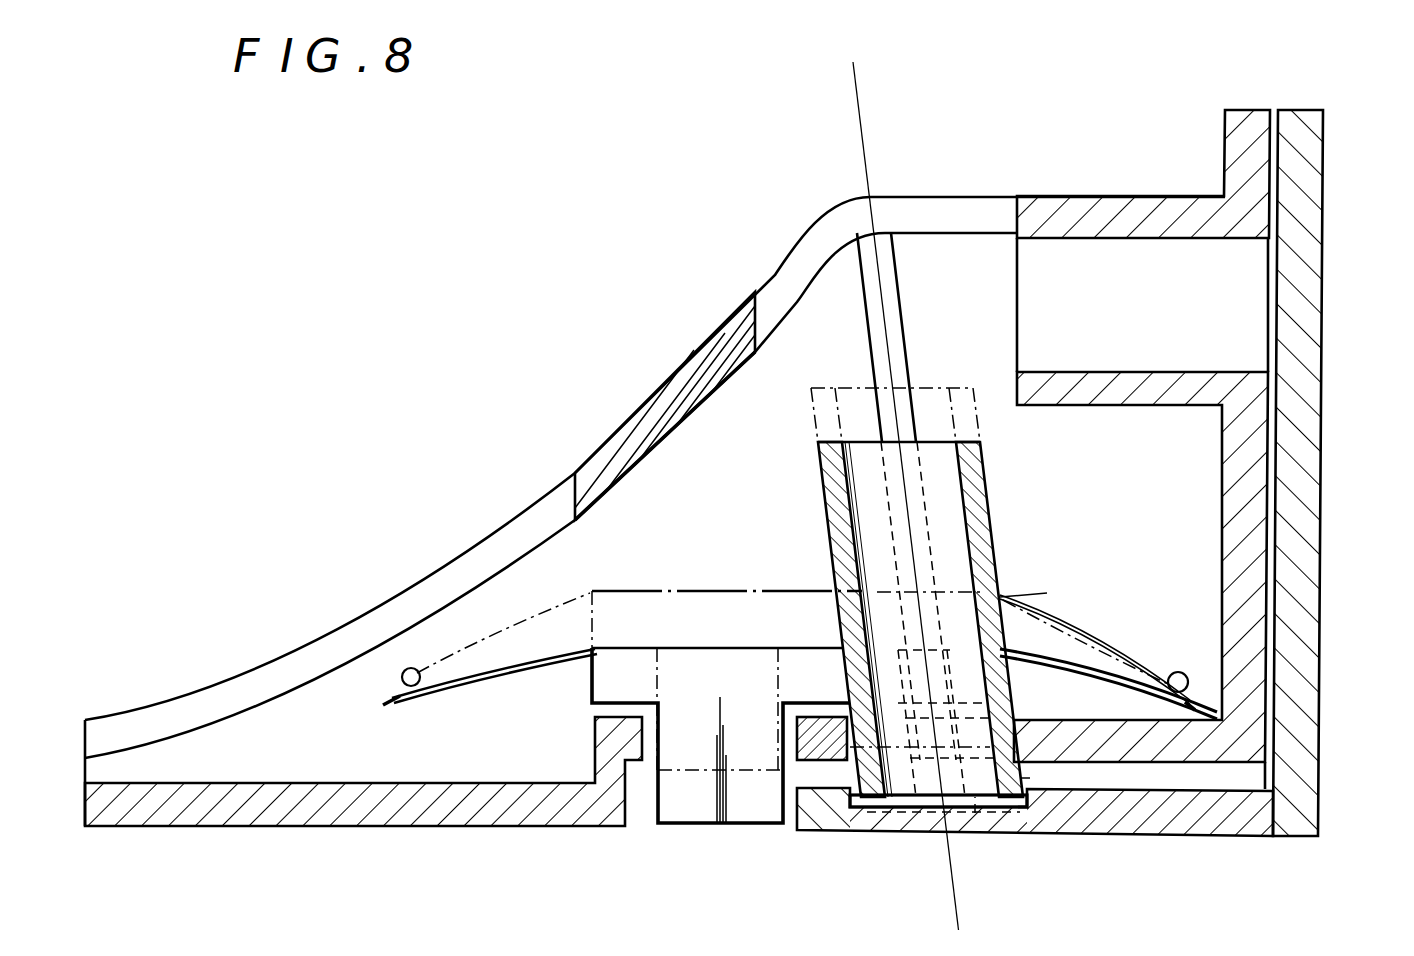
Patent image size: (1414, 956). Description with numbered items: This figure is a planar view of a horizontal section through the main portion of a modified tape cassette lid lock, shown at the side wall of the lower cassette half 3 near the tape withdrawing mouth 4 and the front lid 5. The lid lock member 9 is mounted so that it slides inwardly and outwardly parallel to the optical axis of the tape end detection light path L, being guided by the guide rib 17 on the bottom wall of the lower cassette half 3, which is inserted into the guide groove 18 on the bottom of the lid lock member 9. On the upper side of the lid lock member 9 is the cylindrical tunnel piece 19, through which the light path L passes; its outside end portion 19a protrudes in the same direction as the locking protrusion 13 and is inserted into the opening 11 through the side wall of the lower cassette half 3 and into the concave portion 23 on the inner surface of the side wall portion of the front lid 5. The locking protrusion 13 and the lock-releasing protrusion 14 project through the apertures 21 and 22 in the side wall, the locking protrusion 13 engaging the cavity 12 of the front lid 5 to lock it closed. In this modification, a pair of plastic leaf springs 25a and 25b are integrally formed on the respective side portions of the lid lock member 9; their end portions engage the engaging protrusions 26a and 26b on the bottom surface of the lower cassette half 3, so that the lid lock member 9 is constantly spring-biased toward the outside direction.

The lower cassette half 3 is at (366, 815).
The tape withdrawing mouth 4 is at (1250, 291).
The front lid 5 is at (1312, 455).
The lid lock member 9 is at (1046, 594).
The opening 11 is at (1010, 718).
The cavity 12 is at (975, 813).
The locking protrusion 13 is at (905, 813).
The lock-releasing protrusion 14 is at (685, 806).
The guide rib 17 is at (898, 275).
The guide groove 18 is at (916, 501).
The tunnel piece 19 is at (828, 535).
The outside end portion 19a is at (859, 803).
The aperture 21 is at (1030, 778).
The aperture 22 is at (800, 740).
The concave portion 23 is at (1018, 808).
The spring 25a is at (522, 660).
The spring 25b is at (1103, 672).
The engaging protrusion 26a is at (403, 680).
The engaging protrusion 26b is at (1178, 672).
The tape end detection light path L is at (855, 90).